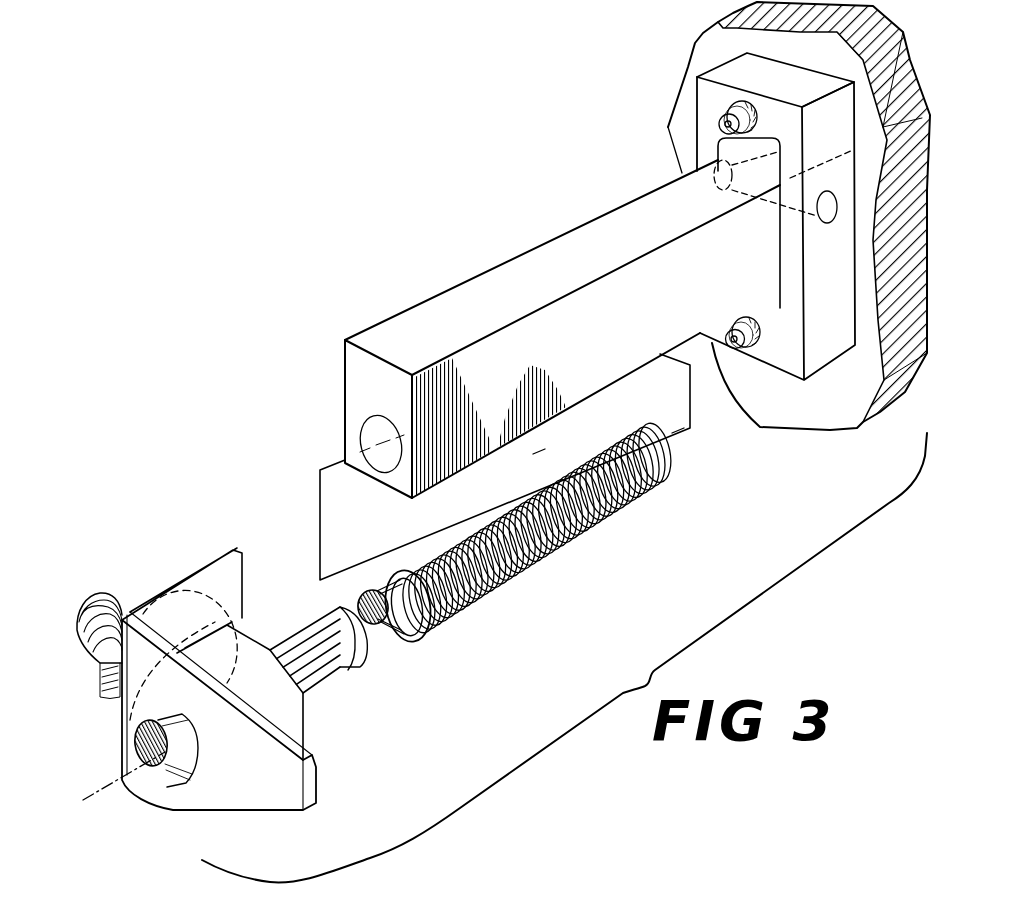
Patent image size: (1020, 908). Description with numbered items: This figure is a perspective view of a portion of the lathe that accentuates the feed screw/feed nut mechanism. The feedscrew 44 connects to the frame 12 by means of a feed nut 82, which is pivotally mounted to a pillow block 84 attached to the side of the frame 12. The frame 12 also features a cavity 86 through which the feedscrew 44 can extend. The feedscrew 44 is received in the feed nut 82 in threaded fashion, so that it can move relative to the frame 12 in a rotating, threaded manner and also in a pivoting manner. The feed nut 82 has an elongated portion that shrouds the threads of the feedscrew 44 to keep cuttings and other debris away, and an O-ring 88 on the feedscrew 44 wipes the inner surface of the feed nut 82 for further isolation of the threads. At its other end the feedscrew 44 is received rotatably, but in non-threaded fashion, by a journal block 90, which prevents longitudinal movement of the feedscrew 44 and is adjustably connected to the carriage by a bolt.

The frame 12 is at (683, 90).
The pillow block 84 is at (710, 143).
The cavity 86 is at (772, 292).
The feed nut 82 is at (472, 300).
The feedscrew 44 is at (550, 548).
The O-ring 88 is at (430, 633).
The journal block 90 is at (180, 622).